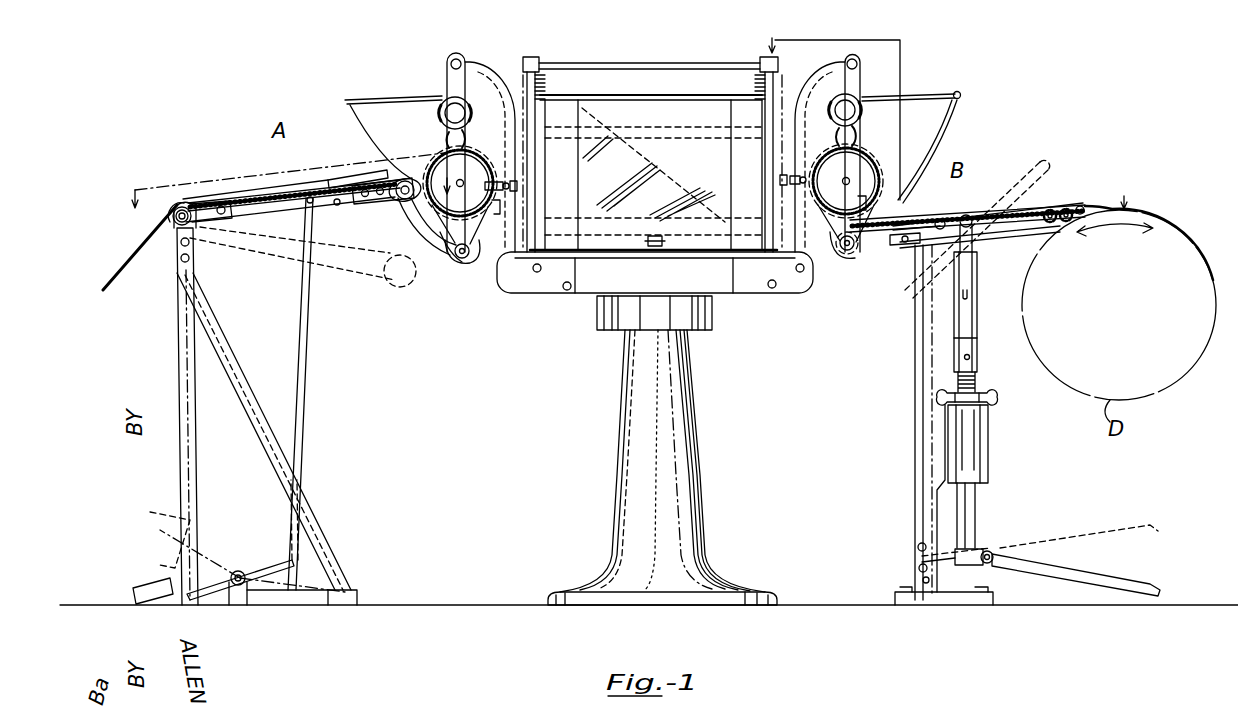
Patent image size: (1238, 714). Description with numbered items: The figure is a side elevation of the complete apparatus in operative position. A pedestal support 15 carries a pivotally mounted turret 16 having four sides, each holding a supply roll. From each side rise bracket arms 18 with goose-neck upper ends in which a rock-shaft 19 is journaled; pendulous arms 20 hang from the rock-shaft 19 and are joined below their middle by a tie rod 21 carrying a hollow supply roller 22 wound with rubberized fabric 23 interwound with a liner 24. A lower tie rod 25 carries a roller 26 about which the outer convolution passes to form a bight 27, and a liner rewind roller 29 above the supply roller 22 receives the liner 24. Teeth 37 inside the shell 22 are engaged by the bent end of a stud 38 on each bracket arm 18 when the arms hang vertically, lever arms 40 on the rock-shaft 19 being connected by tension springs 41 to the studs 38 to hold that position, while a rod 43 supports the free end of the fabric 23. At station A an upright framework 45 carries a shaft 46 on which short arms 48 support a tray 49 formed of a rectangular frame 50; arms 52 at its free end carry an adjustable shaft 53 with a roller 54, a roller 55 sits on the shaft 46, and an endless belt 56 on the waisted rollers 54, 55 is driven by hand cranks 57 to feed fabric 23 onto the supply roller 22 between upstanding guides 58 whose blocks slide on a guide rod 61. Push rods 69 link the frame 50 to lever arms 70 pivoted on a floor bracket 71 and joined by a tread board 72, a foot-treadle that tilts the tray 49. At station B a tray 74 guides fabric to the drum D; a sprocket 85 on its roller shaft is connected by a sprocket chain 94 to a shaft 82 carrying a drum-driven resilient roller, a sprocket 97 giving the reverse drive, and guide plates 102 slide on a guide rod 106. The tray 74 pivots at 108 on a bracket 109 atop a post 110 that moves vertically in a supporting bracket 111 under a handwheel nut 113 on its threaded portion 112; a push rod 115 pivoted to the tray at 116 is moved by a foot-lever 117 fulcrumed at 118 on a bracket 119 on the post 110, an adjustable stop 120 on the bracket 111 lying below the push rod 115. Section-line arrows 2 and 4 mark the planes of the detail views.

The section line 2- 2 is at (287, 180).
The section line 4- 4 is at (947, 113).
The pedestal support 15 is at (700, 464).
The turret 16 is at (722, 298).
The bracket arms 18 is at (468, 63).
The rock-shaft 19 is at (454, 60).
The pendulous arms 20 is at (440, 234).
The tie rod 21 is at (464, 183).
The supply roller 22 is at (467, 152).
The tire building fabric 23 is at (110, 292).
The liner 24 is at (450, 152).
The tie rod 25 is at (461, 260).
The roller 26 is at (473, 262).
The bight 27 is at (452, 248).
The liner supply and rewind roller 29 is at (468, 113).
The teeth 37 is at (497, 207).
The stud 38 is at (497, 180).
The lever arms 40 is at (495, 62).
The tension springs 41 is at (540, 85).
The rod 43 is at (379, 105).
The upright framework 45 is at (177, 354).
The rotatable shaft 46 is at (176, 228).
The short arms 48 is at (221, 223).
The tray 49 is at (230, 200).
The rectangular metal frame 50 is at (270, 197).
The arms 52 is at (378, 200).
The shaft 53 is at (404, 180).
The roller 54 is at (408, 205).
The roller 55 is at (184, 203).
The endless belt 56 is at (259, 235).
The hand cranks 57 is at (206, 223).
The upstanding guides 58 is at (338, 178).
The guide rod 61 is at (337, 206).
The push rods 69 is at (306, 368).
The lever arms 70 is at (260, 570).
The floor bracket 71 is at (238, 590).
The tread board 72 is at (147, 585).
The tray 74 is at (932, 217).
The shaft 82 is at (1071, 208).
The sprocket 85 is at (852, 250).
The sprocket chain 94 is at (992, 240).
The sprocket 97 is at (1051, 208).
The guide plates 102 is at (1043, 185).
The guide rod 106 is at (946, 222).
The pivot 108 is at (970, 215).
The bracket 109 is at (984, 246).
The post 110 is at (977, 330).
The supporting bracket 111 is at (989, 458).
The threaded portion 112 is at (978, 384).
The nut 113 is at (995, 401).
The push rod 115 is at (915, 382).
The pivotal connection 116 is at (901, 246).
The foot-lever 117 is at (1043, 560).
The fulcrum 118 is at (992, 554).
The bracket 119 is at (971, 548).
The adjustable stop 120 is at (912, 586).